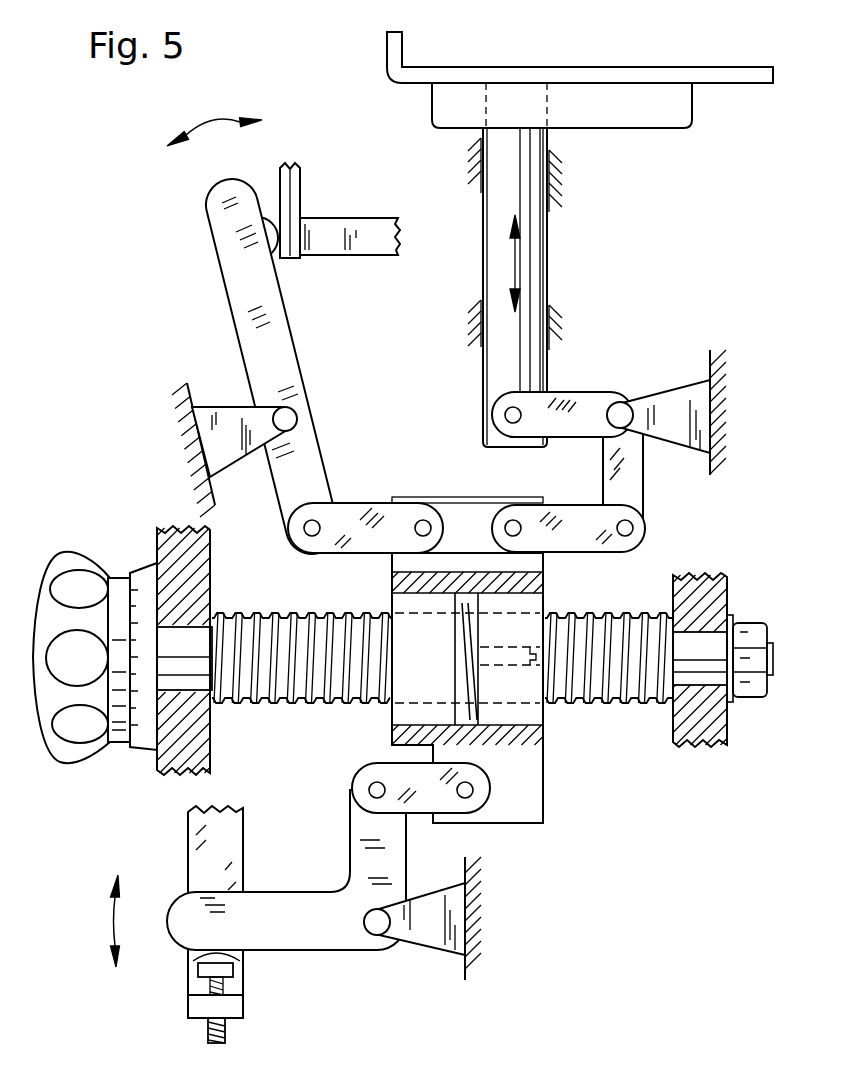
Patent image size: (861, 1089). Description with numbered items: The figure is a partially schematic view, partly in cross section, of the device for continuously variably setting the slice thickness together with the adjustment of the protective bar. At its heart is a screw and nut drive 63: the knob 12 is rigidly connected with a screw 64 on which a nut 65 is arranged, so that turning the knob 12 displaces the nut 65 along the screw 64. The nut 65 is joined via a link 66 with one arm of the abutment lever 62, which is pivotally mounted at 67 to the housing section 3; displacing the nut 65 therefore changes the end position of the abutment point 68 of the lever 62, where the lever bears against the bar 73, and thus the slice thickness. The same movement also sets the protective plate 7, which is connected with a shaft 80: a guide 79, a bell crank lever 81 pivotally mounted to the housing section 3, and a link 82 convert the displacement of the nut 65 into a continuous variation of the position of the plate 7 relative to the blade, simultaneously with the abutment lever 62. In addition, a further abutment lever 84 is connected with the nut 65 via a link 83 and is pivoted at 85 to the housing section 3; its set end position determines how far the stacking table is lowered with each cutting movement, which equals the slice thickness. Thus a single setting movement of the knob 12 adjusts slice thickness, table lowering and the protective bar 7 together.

The housing section 3 is at (720, 422).
The protective plate 7 is at (393, 54).
The knob 12 is at (54, 743).
The abutment lever 62 is at (231, 278).
The screw and nut drive 63 is at (291, 735).
The screw 64 is at (297, 612).
The nut 65 is at (535, 732).
The link 66 is at (350, 510).
The pivot 67 is at (290, 419).
The abutment point 68 is at (272, 212).
The bar 73 is at (327, 225).
The guide 79 is at (548, 280).
The shaft 80 is at (493, 369).
The bell crank lever 81 is at (595, 400).
The link 82 is at (565, 505).
The link 83 is at (423, 812).
The further abutment lever 84 is at (295, 902).
The pivot 85 is at (373, 934).